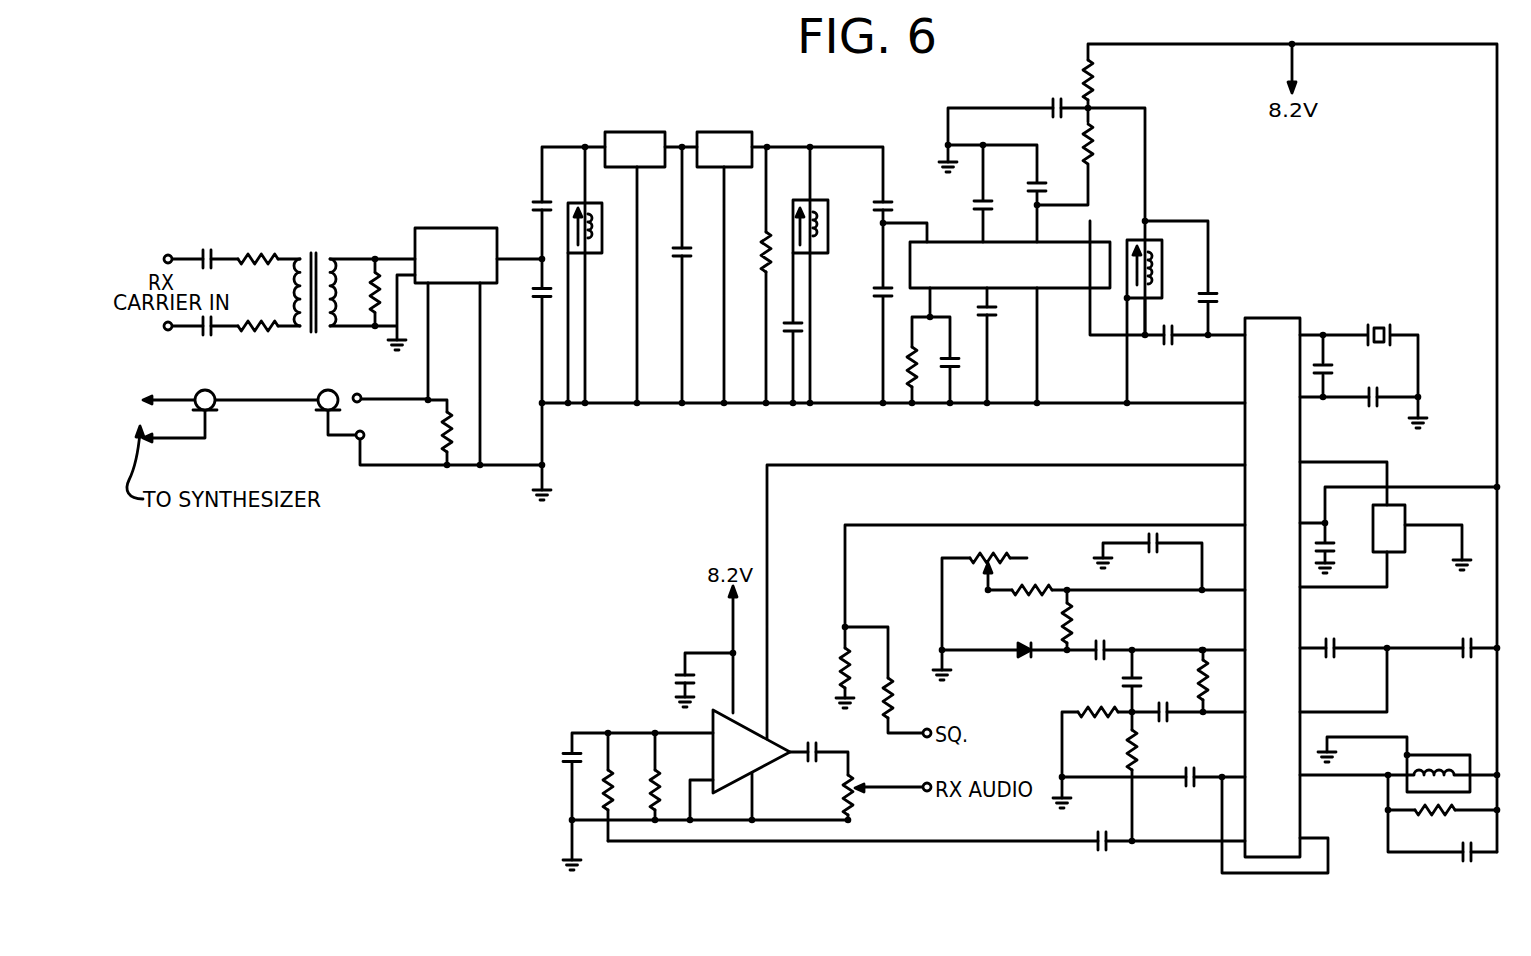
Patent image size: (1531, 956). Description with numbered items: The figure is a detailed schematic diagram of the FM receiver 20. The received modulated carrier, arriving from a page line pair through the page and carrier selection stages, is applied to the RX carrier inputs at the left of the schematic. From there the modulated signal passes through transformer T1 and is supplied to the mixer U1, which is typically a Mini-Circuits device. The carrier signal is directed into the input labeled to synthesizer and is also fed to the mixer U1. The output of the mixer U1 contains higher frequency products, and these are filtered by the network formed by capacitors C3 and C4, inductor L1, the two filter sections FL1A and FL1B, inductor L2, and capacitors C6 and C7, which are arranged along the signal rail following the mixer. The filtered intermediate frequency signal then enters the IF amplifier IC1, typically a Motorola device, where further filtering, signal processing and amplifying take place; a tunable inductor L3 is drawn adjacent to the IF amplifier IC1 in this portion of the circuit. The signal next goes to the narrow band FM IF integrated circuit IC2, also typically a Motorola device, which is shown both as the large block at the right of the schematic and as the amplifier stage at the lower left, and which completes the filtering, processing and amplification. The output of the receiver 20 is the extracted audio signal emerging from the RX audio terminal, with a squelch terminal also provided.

The FM receiver 20 is at (758, 110).
The transformer T1 is at (315, 254).
The mixer U1 is at (437, 227).
The capacitor C3 is at (540, 199).
The capacitor C4 is at (540, 298).
The filter section FL1A is at (635, 149).
The filter section FL1B is at (724, 149).
The inductor L1 is at (603, 243).
The inductor L2 is at (828, 227).
The capacitor C6 is at (883, 199).
The capacitor C7 is at (879, 298).
The IF amplifier IC1 is at (1008, 299).
The inductor L3 is at (1162, 262).
The narrow band FM IF integrated circuit IC2 is at (1006, 587).